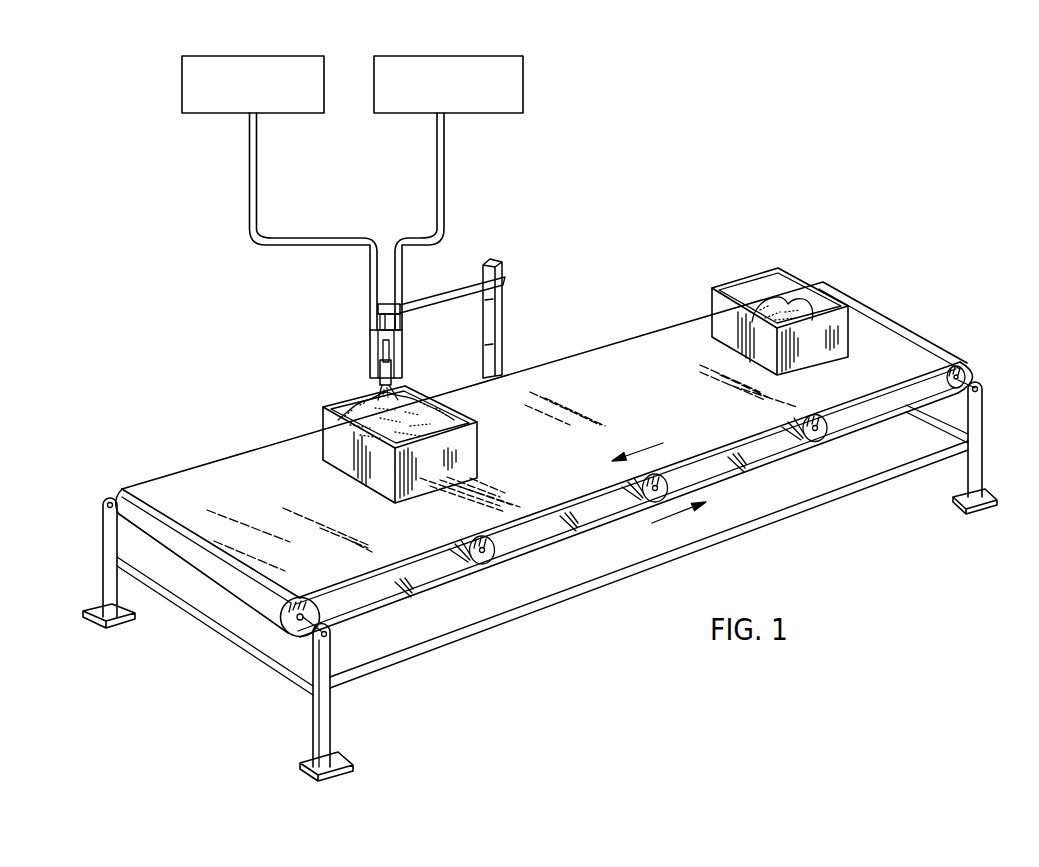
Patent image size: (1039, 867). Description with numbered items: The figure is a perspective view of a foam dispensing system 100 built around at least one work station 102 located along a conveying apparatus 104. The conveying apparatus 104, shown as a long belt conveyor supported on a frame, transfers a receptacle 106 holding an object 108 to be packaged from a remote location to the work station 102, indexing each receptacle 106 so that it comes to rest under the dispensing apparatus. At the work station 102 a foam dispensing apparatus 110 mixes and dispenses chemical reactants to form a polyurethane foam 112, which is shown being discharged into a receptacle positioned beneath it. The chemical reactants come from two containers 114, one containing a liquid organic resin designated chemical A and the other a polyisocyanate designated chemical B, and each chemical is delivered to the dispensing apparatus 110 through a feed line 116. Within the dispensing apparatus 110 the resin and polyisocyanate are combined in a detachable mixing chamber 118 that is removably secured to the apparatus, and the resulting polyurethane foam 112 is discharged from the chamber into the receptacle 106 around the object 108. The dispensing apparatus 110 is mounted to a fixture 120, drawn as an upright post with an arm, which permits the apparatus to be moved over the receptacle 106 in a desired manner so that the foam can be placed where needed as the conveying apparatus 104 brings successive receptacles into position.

The foam dispensing system 100 is at (740, 162).
The work station 102 is at (443, 268).
The conveying apparatus 104 is at (928, 353).
The receptacle 106 is at (842, 327).
The object 108 is at (780, 303).
The foam dispensing apparatus 110 is at (402, 343).
The polyurethane foam 112 is at (423, 391).
The containers 114 is at (297, 63).
The feed lines 116 is at (255, 193).
The detachable mixing chamber 118 is at (376, 375).
The fixture 120 is at (500, 337).